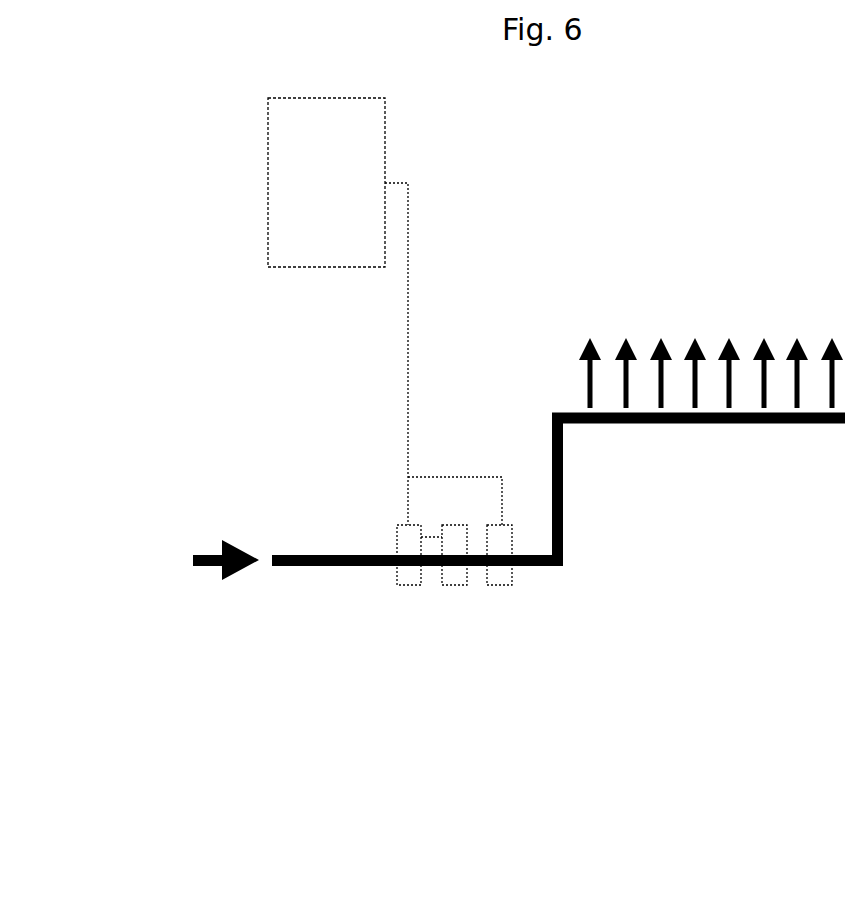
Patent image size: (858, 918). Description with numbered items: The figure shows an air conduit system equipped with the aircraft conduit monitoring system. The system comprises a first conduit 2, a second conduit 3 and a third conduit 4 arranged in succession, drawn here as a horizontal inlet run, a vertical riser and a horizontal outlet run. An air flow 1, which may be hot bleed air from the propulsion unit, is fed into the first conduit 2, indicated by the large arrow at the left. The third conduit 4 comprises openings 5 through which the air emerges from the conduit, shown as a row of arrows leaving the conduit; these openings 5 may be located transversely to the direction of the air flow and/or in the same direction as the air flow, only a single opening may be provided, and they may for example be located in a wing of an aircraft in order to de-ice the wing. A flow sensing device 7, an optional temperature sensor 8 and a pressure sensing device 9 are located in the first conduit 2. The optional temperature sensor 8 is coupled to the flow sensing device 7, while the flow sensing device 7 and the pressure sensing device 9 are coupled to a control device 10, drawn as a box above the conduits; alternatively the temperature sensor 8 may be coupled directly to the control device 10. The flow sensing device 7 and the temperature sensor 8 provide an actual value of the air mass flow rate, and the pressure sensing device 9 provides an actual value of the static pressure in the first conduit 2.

The air flow 1 is at (248, 532).
The first conduit 2 is at (340, 587).
The second conduit 3 is at (582, 480).
The third conduit 4 is at (698, 445).
The openings 5 is at (660, 325).
The flow sensing device 7 is at (410, 598).
The temperature sensor 8 is at (456, 598).
The pressure sensing device 9 is at (501, 598).
The control device 10 is at (243, 155).